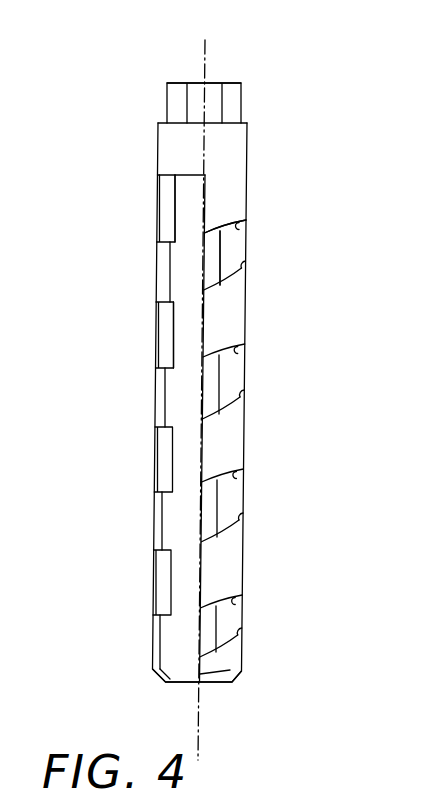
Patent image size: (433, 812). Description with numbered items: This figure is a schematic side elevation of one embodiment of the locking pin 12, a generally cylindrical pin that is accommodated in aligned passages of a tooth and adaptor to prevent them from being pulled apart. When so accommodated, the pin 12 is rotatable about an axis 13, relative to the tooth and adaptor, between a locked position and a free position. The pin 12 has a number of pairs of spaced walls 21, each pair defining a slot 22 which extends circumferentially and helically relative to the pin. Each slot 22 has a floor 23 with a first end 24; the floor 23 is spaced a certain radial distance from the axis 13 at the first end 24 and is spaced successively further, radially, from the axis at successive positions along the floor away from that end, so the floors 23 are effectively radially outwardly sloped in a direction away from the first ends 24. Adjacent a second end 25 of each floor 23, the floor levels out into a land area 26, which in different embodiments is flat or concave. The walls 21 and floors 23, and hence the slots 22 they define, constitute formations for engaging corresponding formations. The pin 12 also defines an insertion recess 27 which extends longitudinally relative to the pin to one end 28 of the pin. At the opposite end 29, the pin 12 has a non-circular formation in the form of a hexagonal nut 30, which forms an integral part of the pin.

The locking pin 12 is at (293, 82).
The axis 13 is at (203, 55).
The spaced walls 21 is at (246, 226).
The slot 22 is at (148, 183).
The floor 23 is at (168, 198).
The first end 24 is at (181, 213).
The second end 25 is at (199, 271).
The land area 26 is at (213, 247).
The insertion recess 27 is at (185, 507).
The end of the pin 28 is at (184, 683).
The opposite end 29 is at (234, 75).
The hexagonal nut 30 is at (172, 96).